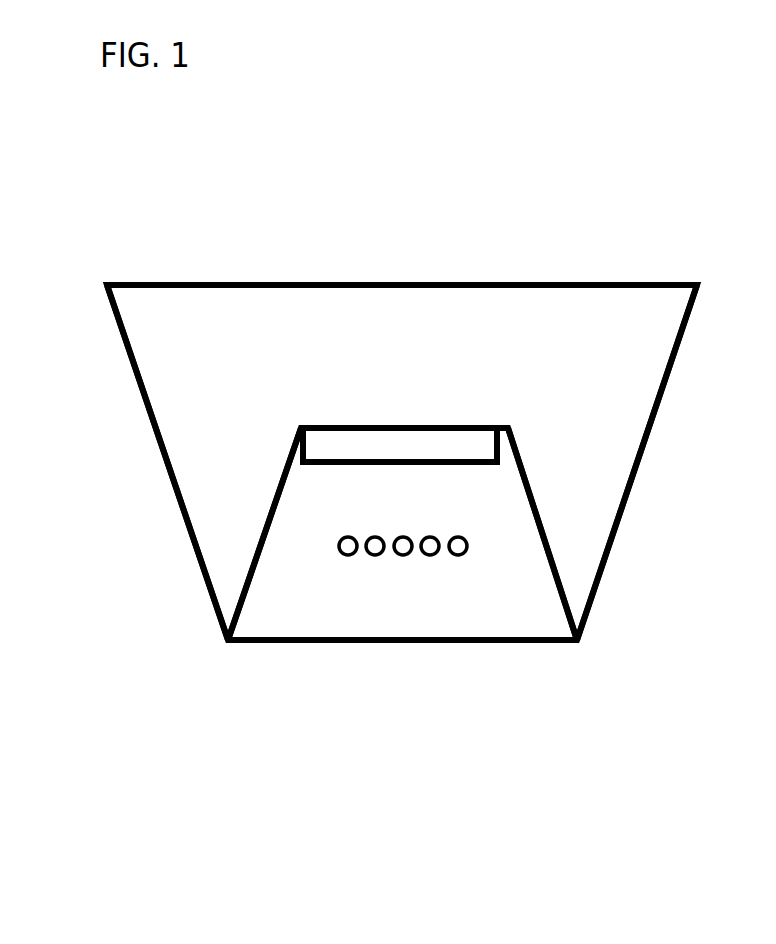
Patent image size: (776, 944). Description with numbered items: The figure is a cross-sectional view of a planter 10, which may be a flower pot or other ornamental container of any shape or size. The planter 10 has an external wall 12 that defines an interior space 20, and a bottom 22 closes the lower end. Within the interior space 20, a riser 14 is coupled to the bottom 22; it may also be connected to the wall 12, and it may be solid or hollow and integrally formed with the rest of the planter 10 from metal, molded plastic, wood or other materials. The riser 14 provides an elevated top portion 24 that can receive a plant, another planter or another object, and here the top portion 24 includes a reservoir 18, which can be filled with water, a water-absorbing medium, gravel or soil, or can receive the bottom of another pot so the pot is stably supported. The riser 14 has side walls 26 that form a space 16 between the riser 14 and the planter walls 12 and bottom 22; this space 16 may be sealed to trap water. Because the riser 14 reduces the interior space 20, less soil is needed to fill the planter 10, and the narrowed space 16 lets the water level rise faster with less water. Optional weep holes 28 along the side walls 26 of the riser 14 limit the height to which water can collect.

The planter 10 is at (239, 217).
The external wall 12 is at (648, 438).
The riser 14 is at (260, 533).
The space 16 is at (228, 588).
The reservoir 18 is at (398, 428).
The interior space 20 is at (205, 338).
The bottom 22 is at (500, 645).
The top portion 24 is at (305, 414).
The side walls 26 is at (275, 493).
The weep holes 28 is at (455, 555).